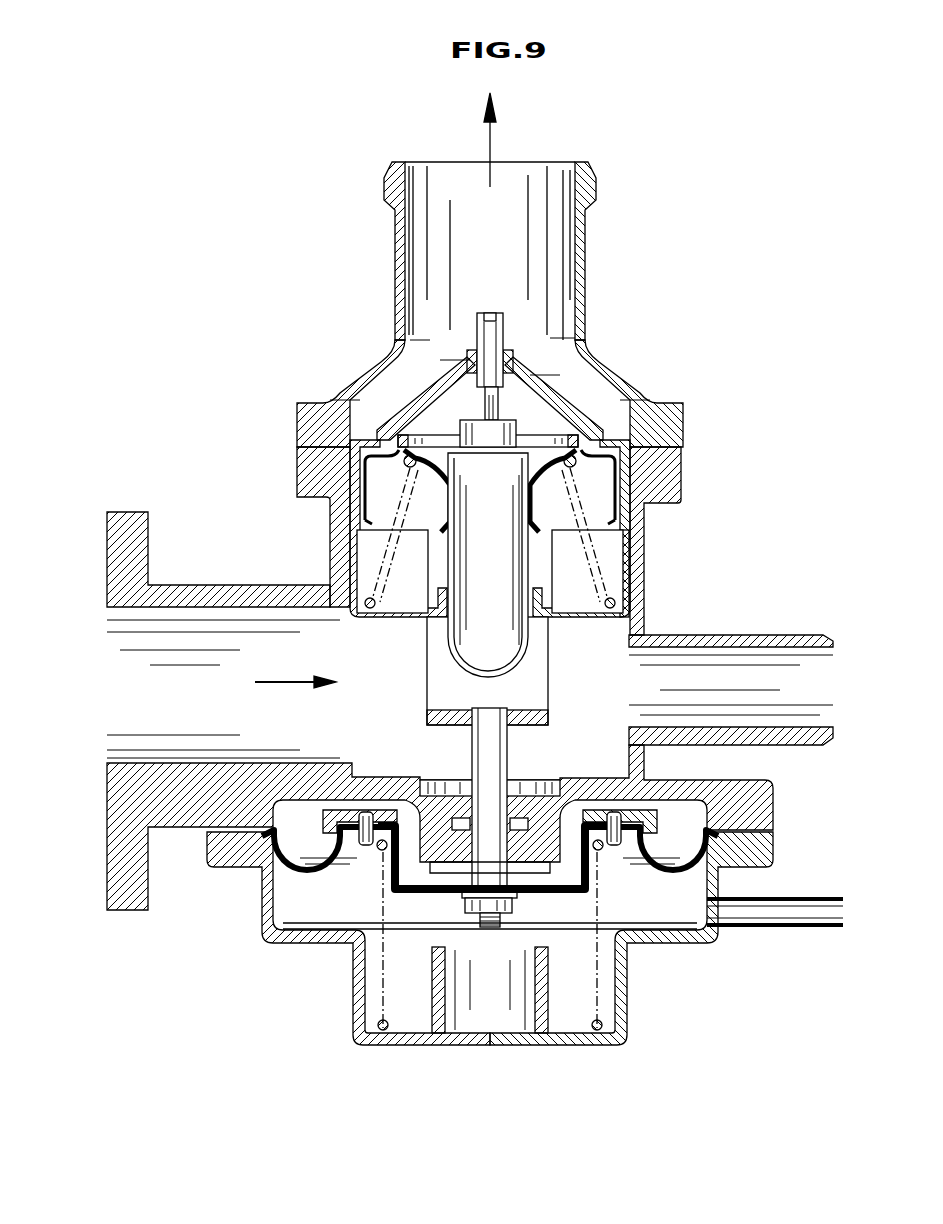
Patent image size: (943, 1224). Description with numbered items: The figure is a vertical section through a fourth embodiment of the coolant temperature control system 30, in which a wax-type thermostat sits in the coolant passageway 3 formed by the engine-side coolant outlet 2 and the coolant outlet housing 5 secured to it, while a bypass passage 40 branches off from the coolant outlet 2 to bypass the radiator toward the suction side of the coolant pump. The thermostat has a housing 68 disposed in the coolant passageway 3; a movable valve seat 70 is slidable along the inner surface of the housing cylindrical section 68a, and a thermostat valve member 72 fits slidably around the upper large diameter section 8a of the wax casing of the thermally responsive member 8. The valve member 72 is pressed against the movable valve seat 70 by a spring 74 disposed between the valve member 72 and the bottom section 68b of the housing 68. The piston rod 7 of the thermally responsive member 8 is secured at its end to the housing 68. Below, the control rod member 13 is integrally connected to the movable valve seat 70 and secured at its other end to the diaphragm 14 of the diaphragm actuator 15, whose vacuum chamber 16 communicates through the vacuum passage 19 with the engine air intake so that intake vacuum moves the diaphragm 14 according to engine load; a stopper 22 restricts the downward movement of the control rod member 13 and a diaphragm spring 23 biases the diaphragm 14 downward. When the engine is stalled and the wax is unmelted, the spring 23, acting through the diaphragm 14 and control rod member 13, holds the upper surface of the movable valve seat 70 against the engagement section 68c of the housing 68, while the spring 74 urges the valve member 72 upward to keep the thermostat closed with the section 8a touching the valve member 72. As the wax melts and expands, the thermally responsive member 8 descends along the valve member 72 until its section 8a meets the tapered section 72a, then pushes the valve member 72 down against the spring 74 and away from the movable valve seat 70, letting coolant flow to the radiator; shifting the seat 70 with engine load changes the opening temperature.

The coolant outlet 2 is at (190, 592).
The coolant passageway 3 is at (195, 757).
The coolant outlet housing 5 is at (590, 232).
The piston rod 7 is at (480, 398).
The thermally responsive member 8 is at (548, 655).
The upper large diameter section 8a is at (530, 452).
The control rod member 13 is at (508, 762).
The diaphragm 14 is at (262, 882).
The diaphragm actuator 15 is at (668, 945).
The vacuum chamber 16 is at (292, 925).
The vacuum passage 19 is at (784, 928).
The stopper 22 is at (550, 1040).
The diaphragm spring 23 is at (382, 927).
The coolant temperature control system 30 is at (660, 343).
The bypass passage 40 is at (776, 635).
The thermostat housing 68 is at (580, 382).
The housing cylindrical section 68a is at (368, 546).
The bottom section 68b is at (622, 600).
The engagement section 68c is at (345, 402).
The movable valve seat 70 is at (302, 468).
The thermostat valve member 72 is at (558, 438).
The tapered section 72a is at (462, 445).
The spring 74 is at (608, 526).